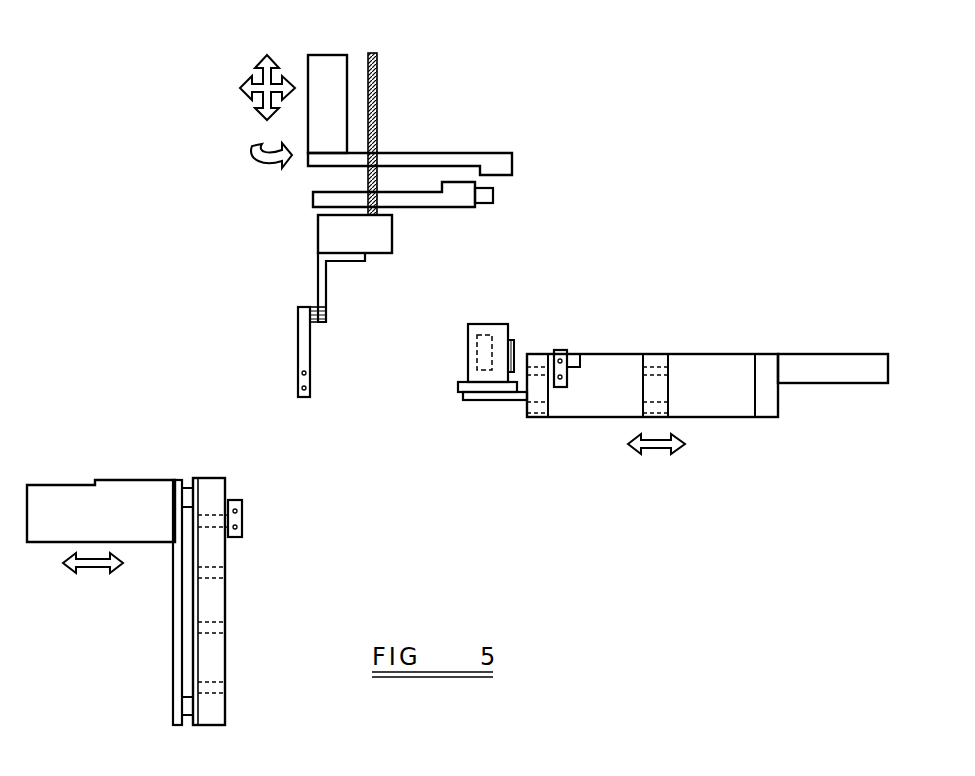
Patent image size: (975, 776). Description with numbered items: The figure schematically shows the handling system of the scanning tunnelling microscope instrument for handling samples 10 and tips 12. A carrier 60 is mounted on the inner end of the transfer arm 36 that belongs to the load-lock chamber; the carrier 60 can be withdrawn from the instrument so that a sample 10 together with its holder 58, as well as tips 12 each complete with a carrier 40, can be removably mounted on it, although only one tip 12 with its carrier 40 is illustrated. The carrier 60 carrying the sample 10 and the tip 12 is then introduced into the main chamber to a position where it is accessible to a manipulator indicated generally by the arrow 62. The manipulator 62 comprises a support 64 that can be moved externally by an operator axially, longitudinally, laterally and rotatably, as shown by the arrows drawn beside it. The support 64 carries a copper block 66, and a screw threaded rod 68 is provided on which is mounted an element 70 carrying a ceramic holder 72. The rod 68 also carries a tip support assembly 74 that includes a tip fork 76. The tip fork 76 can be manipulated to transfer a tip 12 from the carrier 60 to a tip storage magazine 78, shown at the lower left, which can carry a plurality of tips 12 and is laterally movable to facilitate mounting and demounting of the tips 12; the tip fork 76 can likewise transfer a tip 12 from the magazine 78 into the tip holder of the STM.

The sample 10 is at (512, 338).
The tip 12 is at (582, 363).
The transfer arm 36 is at (838, 375).
The carrier 40 is at (563, 350).
The holder 58 is at (473, 333).
The carrier 60 is at (703, 355).
The manipulator 62 is at (470, 130).
The support 64 is at (318, 60).
The copper block 66 is at (503, 158).
The screw threaded rod 68 is at (377, 107).
The element 70 is at (458, 200).
The ceramic holder 72 is at (493, 195).
The tip support assembly 74 is at (373, 242).
The tip fork 76 is at (312, 347).
The tip storage magazine 78 is at (242, 604).